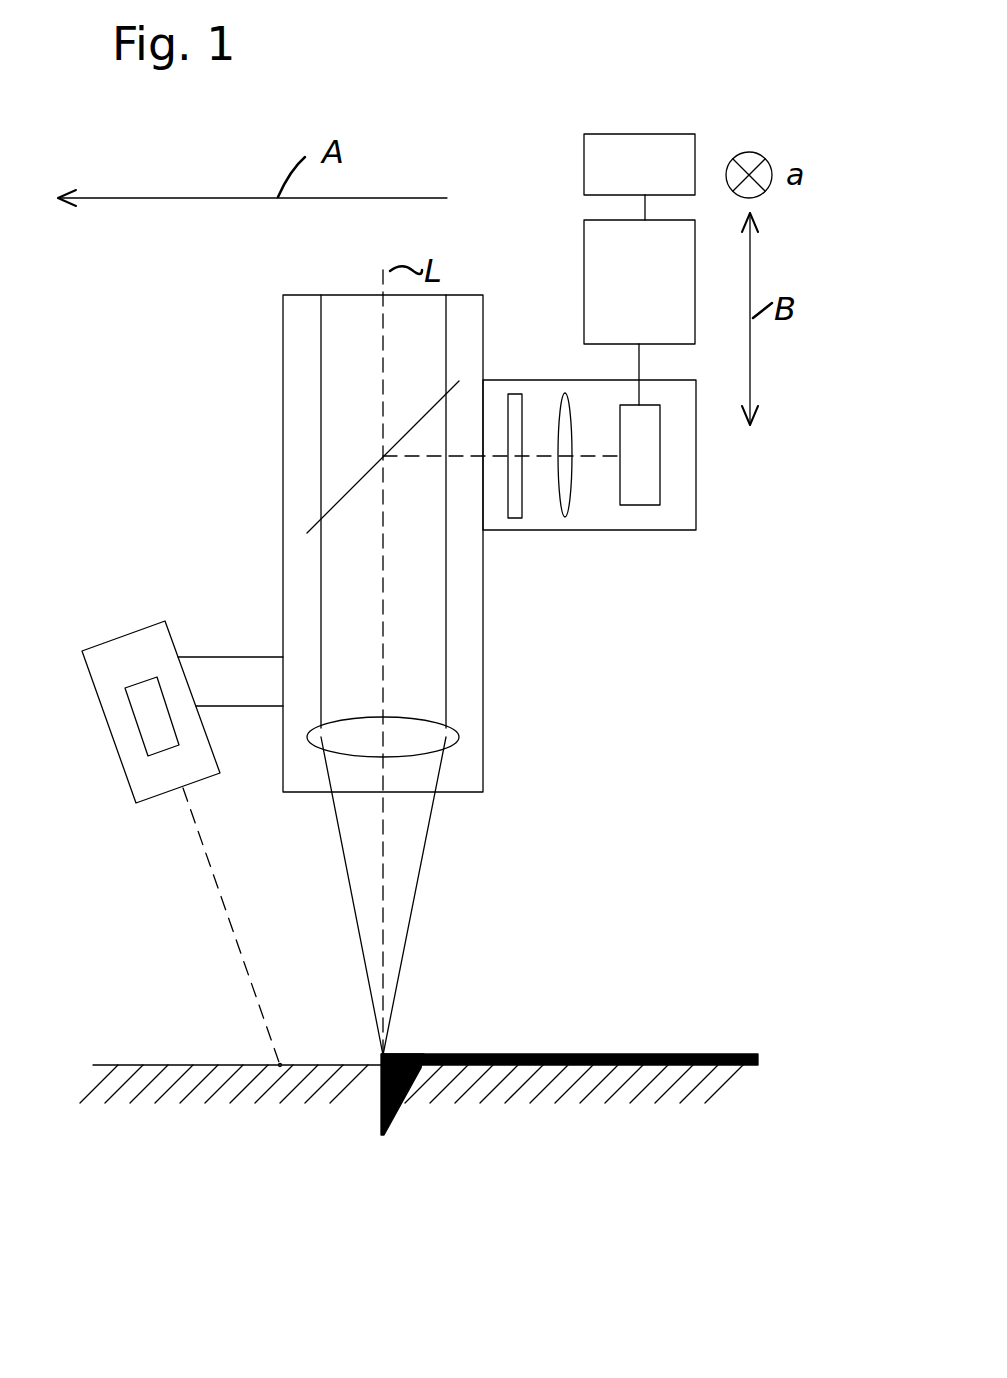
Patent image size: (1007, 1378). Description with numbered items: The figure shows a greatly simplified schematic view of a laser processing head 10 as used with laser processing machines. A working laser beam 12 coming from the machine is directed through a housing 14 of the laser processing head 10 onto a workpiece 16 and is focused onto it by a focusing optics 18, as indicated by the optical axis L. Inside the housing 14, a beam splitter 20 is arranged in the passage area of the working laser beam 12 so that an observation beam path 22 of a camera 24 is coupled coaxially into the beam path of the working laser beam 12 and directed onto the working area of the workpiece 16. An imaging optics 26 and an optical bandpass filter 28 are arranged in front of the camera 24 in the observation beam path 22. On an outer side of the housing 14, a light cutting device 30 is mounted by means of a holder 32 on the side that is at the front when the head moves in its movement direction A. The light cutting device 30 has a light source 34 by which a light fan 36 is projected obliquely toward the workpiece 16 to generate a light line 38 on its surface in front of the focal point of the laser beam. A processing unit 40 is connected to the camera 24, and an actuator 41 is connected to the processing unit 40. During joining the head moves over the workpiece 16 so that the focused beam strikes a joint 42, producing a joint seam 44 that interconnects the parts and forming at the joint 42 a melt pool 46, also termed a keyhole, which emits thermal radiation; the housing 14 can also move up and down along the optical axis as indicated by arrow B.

The laser processing head 10 is at (600, 70).
The working laser beam 12 is at (320, 335).
The housing 14 is at (283, 409).
The workpiece 16 is at (165, 1063).
The focusing optics 18 is at (460, 734).
The beam splitter 20 is at (335, 507).
The observation beam path 22 is at (465, 457).
The camera 24 is at (655, 494).
The imaging optics 26 is at (565, 513).
The optical bandpass filter 28 is at (513, 512).
The light cutting device 30 is at (135, 648).
The holder 32 is at (240, 655).
The light source 34 is at (152, 725).
The light fan 36 is at (212, 892).
The light line 38 is at (280, 1066).
The processing unit 40 is at (590, 240).
The actuator 41 is at (668, 130).
The joint 42 is at (386, 1052).
The joint seam 44 is at (706, 1054).
The melt pool 46 is at (392, 1106).